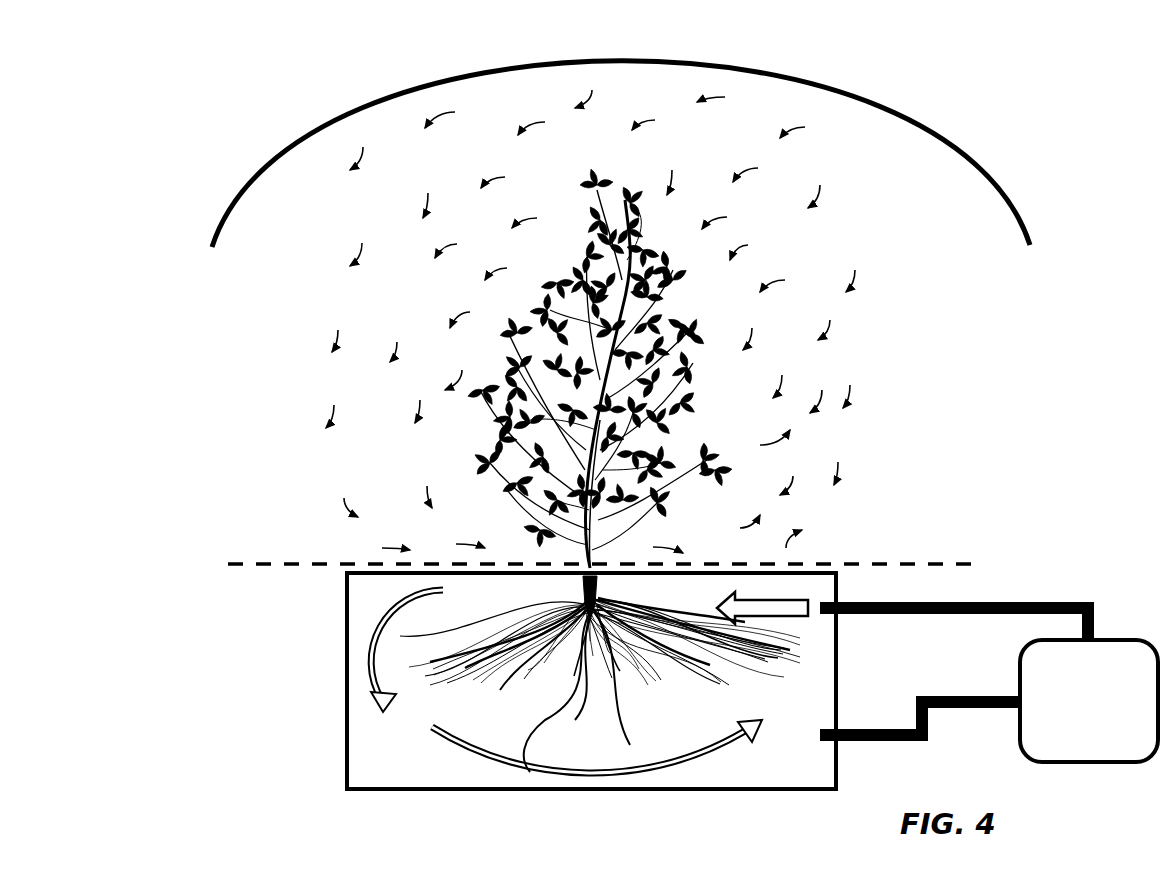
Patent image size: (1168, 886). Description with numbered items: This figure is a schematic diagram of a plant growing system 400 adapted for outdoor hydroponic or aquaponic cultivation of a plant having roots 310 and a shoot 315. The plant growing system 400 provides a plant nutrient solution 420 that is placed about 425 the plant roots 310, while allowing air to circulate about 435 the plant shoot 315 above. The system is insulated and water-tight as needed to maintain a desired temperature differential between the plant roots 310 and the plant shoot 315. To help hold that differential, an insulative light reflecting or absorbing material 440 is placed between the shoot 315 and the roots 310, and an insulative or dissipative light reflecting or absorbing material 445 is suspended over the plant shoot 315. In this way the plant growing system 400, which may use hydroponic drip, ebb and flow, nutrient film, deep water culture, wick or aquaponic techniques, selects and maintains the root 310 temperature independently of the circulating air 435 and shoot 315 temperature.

The plant growing system 400 is at (238, 98).
The insulative or dissipative light reflecting or absorbing material 445 is at (1020, 187).
The insulative light reflecting or absorbing material 440 is at (934, 553).
The air circulation about the plant shoot 435 is at (815, 240).
The shoot 315 is at (478, 428).
The nutrient solution about the plant roots 425 is at (812, 590).
The roots 310 is at (435, 703).
The plant nutrient solution 420 is at (989, 685).